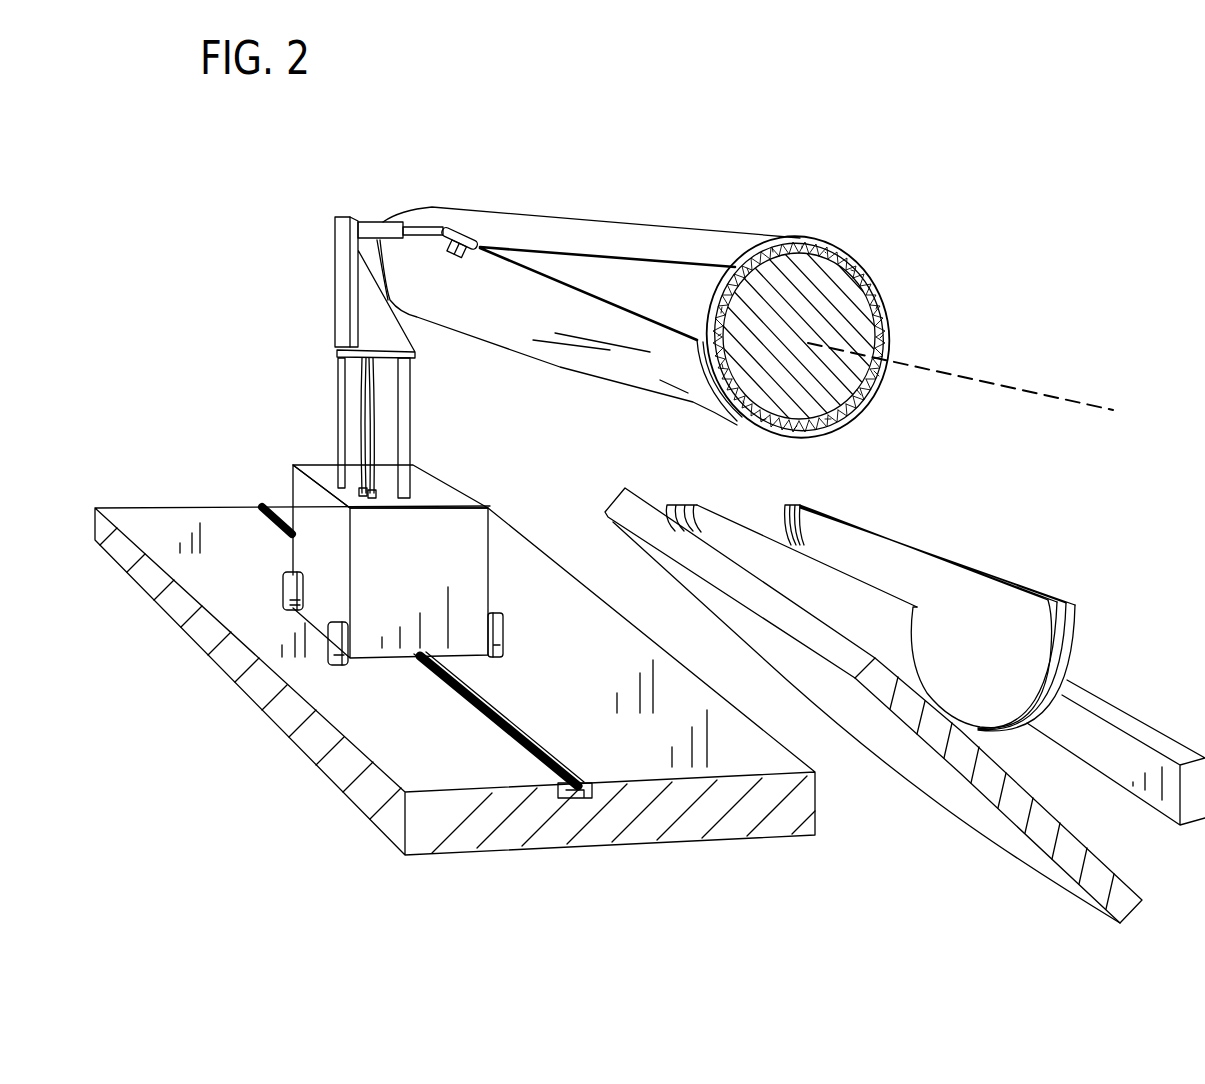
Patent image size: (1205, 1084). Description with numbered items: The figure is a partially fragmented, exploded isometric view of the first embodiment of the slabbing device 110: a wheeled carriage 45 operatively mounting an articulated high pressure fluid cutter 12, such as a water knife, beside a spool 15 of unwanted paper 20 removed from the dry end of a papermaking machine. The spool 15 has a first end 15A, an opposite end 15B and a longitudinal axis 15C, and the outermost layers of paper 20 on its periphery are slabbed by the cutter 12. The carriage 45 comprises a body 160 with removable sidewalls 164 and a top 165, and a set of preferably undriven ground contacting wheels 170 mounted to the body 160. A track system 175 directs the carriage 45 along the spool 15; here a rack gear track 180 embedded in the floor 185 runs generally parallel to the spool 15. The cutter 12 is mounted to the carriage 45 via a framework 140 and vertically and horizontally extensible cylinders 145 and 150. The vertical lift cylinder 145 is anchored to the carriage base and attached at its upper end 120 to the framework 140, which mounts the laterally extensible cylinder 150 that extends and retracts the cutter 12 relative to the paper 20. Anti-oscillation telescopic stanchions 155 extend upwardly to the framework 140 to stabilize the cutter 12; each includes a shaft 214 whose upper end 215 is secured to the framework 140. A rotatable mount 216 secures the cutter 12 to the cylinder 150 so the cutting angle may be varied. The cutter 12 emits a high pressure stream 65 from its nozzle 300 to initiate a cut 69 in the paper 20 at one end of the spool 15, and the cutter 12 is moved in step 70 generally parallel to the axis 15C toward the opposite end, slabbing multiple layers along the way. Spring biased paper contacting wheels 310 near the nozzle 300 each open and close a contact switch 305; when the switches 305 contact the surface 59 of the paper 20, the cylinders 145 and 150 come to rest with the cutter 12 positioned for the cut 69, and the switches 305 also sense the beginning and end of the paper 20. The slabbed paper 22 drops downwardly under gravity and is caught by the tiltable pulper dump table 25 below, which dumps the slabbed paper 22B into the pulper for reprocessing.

The slabbing device 110 is at (327, 190).
The spool 15 is at (746, 228).
The first end 15A is at (416, 210).
The opposite end 15B is at (800, 310).
The longitudinal axis 15C is at (972, 373).
The laterally extensible cylinder 150 is at (381, 212).
The nozzle 300 is at (463, 224).
The high pressure fluid cutter 12 is at (484, 235).
The cutting stream 65 is at (500, 238).
The cut 69 is at (508, 246).
The slabbed paper 22 is at (573, 297).
The unwanted paper 20 is at (655, 290).
The rotatable mount 216 is at (443, 241).
The contact switch 305 is at (453, 252).
The paper contacting wheels 310 is at (477, 250).
The paper surface 59 is at (517, 320).
The framework 140 is at (330, 318).
The upper end of shaft 215 is at (337, 367).
The upper end of vertical cylinder 120 is at (407, 370).
The telescopic stanchions 155 is at (335, 457).
The carriage 45 is at (285, 443).
The sidewalls 164 is at (300, 482).
The top 165 is at (442, 495).
The shafts 214 is at (340, 476).
The vertical lift cylinder 145 is at (413, 453).
The ground contacting wheels 170 is at (281, 587).
The moving step 70 is at (341, 660).
The body 160 is at (402, 665).
The rack gear track 180 is at (267, 522).
The track system 175 is at (580, 802).
The floor 185 is at (788, 810).
The slabbed paper 22B is at (1018, 587).
The pulper dump table 25 is at (925, 799).